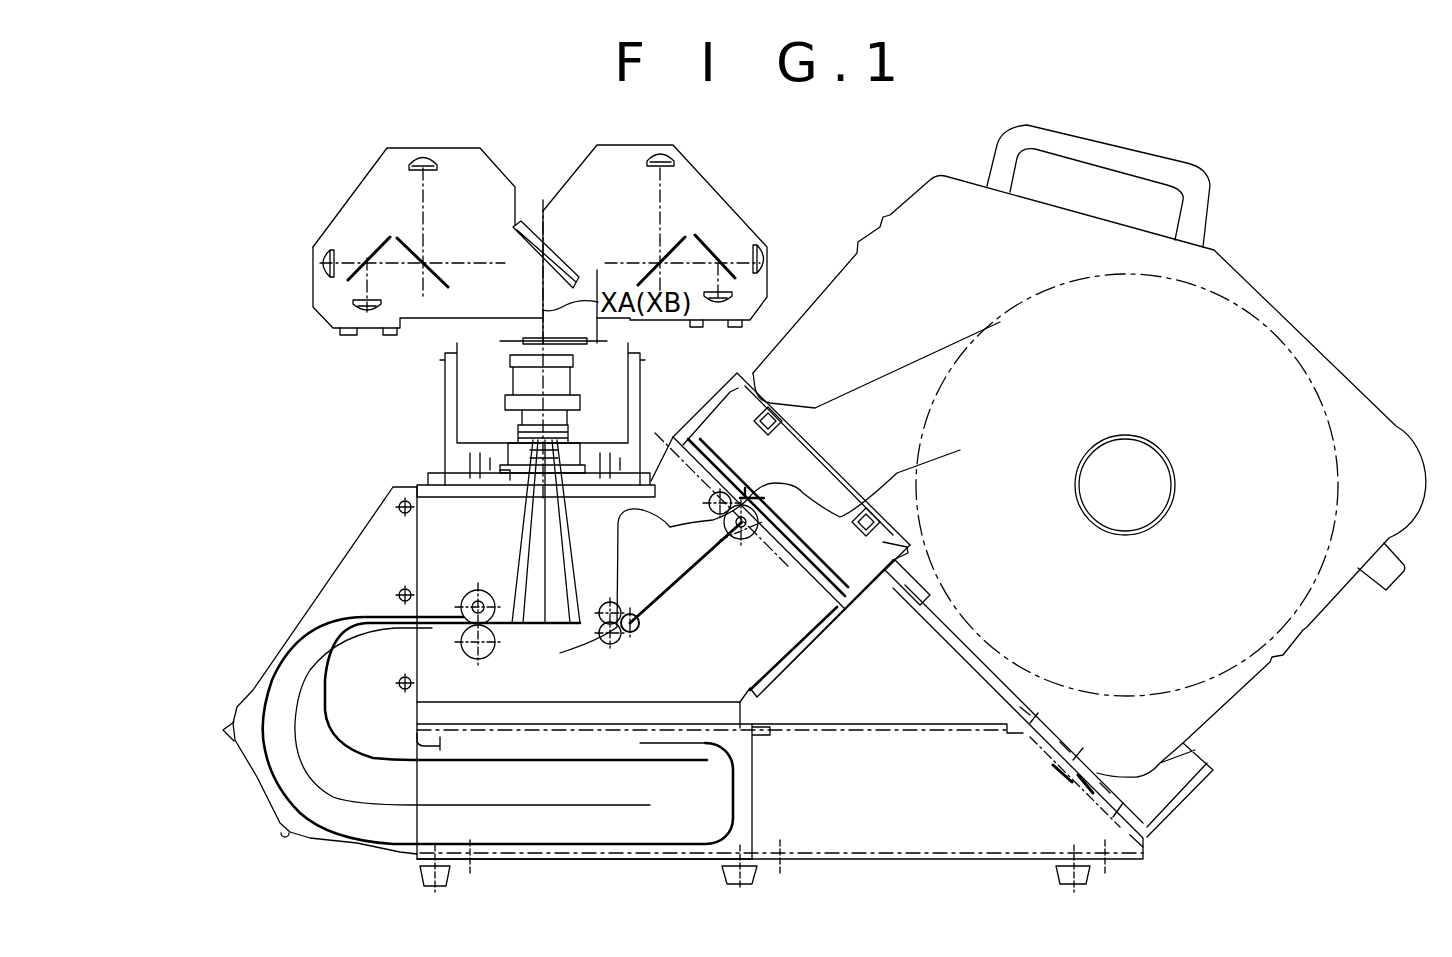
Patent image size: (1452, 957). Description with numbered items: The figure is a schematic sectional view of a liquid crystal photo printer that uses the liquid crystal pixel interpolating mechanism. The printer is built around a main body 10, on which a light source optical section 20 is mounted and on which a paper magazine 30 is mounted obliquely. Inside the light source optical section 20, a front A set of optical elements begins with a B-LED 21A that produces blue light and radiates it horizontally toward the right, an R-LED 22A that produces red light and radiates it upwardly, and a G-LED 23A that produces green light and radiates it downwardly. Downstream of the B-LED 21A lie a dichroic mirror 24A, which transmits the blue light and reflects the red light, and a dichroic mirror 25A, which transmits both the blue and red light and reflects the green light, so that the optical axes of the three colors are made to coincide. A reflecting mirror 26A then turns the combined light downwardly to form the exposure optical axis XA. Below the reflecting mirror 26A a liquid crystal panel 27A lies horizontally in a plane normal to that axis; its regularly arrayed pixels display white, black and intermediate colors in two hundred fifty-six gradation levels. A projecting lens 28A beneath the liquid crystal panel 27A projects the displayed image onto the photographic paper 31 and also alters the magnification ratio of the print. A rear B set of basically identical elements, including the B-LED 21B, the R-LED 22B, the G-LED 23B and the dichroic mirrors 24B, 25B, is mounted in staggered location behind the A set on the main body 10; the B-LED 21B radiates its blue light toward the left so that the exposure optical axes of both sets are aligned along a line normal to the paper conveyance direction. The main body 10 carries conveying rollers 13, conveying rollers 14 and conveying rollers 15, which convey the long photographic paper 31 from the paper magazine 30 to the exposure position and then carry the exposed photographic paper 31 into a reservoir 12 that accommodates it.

The main body 10 is at (283, 578).
The reservoir 12 is at (520, 823).
The conveying rollers 13 is at (723, 545).
The conveying rollers 14 is at (626, 652).
The conveying rollers 15 is at (452, 592).
The light source optical section 20 is at (336, 163).
The B-LED 21A is at (318, 262).
The B-LED 21B is at (762, 250).
The R-LED 22A is at (380, 302).
The R-LED 22B is at (740, 302).
The G-LED 23A is at (435, 157).
The G-LED 23B is at (670, 155).
The dichroic mirror 24A is at (373, 252).
The dichroic mirror 24B is at (708, 243).
The dichroic mirror 25A is at (445, 275).
The dichroic mirror 25B is at (647, 268).
The reflecting mirror 26A is at (505, 188).
The liquid crystal panel 27A is at (522, 340).
The projecting lens 28A is at (520, 377).
The paper magazine 30 is at (1290, 256).
The photographic paper 31 is at (877, 378).